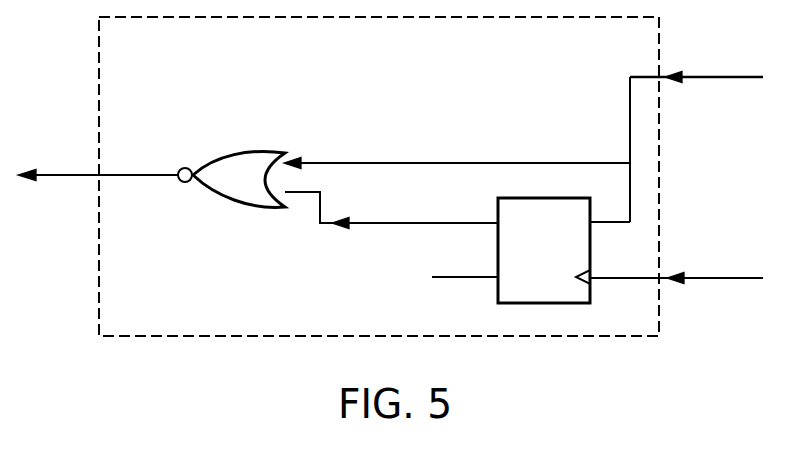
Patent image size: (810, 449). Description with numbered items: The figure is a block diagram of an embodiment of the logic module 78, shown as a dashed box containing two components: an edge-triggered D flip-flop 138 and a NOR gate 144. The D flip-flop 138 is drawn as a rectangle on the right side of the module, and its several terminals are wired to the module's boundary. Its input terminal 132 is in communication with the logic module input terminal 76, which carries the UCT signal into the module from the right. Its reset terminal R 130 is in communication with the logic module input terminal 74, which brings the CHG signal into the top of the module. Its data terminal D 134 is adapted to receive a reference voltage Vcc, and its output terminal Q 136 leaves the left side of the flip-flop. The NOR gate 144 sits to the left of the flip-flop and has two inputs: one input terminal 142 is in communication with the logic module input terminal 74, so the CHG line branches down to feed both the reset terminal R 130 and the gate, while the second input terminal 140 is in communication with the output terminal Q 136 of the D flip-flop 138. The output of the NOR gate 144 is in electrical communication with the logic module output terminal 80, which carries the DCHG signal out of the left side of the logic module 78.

The logic module 78 is at (141, 58).
The logic module input terminal 74 is at (661, 77).
The logic module input terminal 76 is at (662, 277).
The logic module output terminal 80 is at (98, 173).
The reset terminal R 130 is at (593, 224).
The input terminal 132 is at (593, 282).
The data terminal D 134 is at (496, 282).
The output terminal Q 136 is at (497, 218).
The edge-triggered D flip-flop 138 is at (568, 267).
The second input terminal 140 is at (270, 200).
The input terminal 142 is at (288, 153).
The NOR gate 144 is at (258, 192).